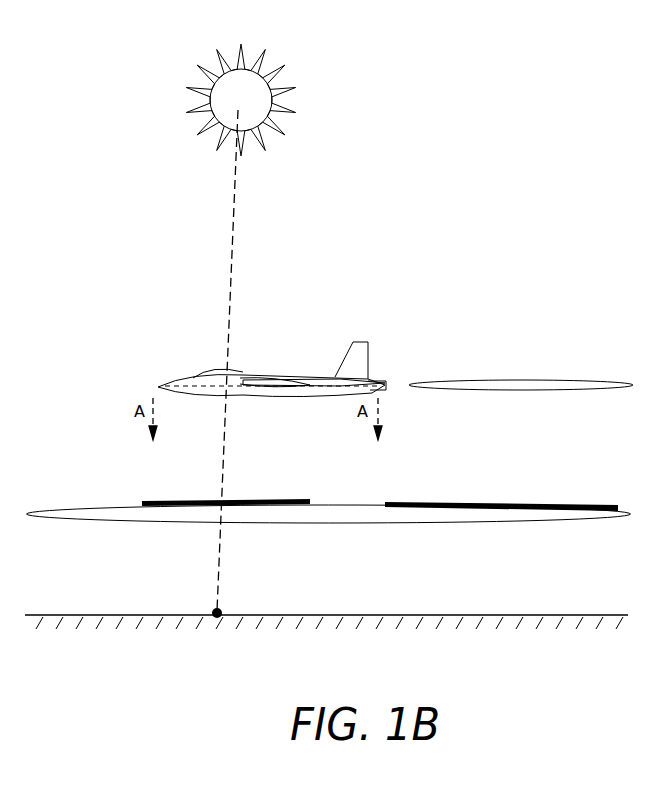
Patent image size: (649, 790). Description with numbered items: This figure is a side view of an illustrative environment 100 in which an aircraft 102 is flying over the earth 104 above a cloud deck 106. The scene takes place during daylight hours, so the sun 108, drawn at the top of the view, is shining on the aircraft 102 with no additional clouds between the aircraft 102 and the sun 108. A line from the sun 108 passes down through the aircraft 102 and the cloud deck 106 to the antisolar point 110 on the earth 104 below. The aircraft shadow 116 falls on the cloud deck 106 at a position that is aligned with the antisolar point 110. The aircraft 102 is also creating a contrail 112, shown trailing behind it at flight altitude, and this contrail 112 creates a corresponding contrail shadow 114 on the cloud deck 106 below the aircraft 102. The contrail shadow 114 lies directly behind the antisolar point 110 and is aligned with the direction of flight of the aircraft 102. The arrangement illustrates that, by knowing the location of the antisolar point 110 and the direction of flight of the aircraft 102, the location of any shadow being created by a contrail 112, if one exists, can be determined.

The illustrative environment 100 is at (503, 80).
The aircraft 102 is at (242, 367).
The earth 104 is at (323, 615).
The cloud deck 106 is at (447, 520).
The sun 108 is at (228, 90).
The antisolar point 110 is at (212, 607).
The contrail 112 is at (488, 388).
The contrail shadow 114 is at (468, 505).
The aircraft shadow 116 is at (250, 502).